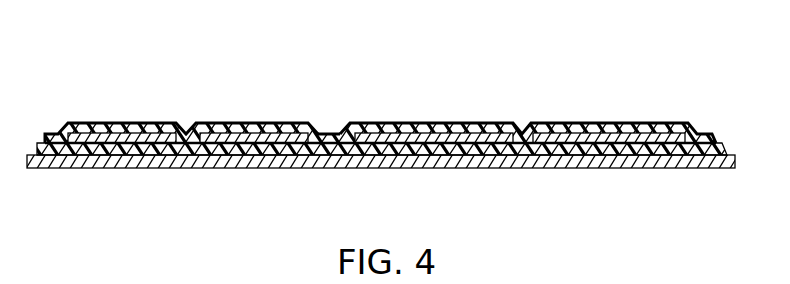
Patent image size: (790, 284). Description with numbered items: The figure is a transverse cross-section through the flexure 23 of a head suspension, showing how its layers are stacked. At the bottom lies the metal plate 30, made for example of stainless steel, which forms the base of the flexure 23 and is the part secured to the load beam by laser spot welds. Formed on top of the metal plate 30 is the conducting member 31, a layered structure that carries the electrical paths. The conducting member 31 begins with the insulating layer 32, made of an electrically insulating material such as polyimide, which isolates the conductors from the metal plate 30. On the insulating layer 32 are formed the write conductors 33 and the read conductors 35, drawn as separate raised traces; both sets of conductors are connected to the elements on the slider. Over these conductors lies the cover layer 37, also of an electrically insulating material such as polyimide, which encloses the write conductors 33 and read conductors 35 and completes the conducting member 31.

The flexure 23 is at (392, 124).
The metal plate 30 is at (562, 163).
The conducting member 31 is at (620, 112).
The insulating layer 32 is at (336, 145).
The write conductors 33 is at (572, 122).
The read conductors 35 is at (243, 125).
The cover layer 37 is at (367, 123).